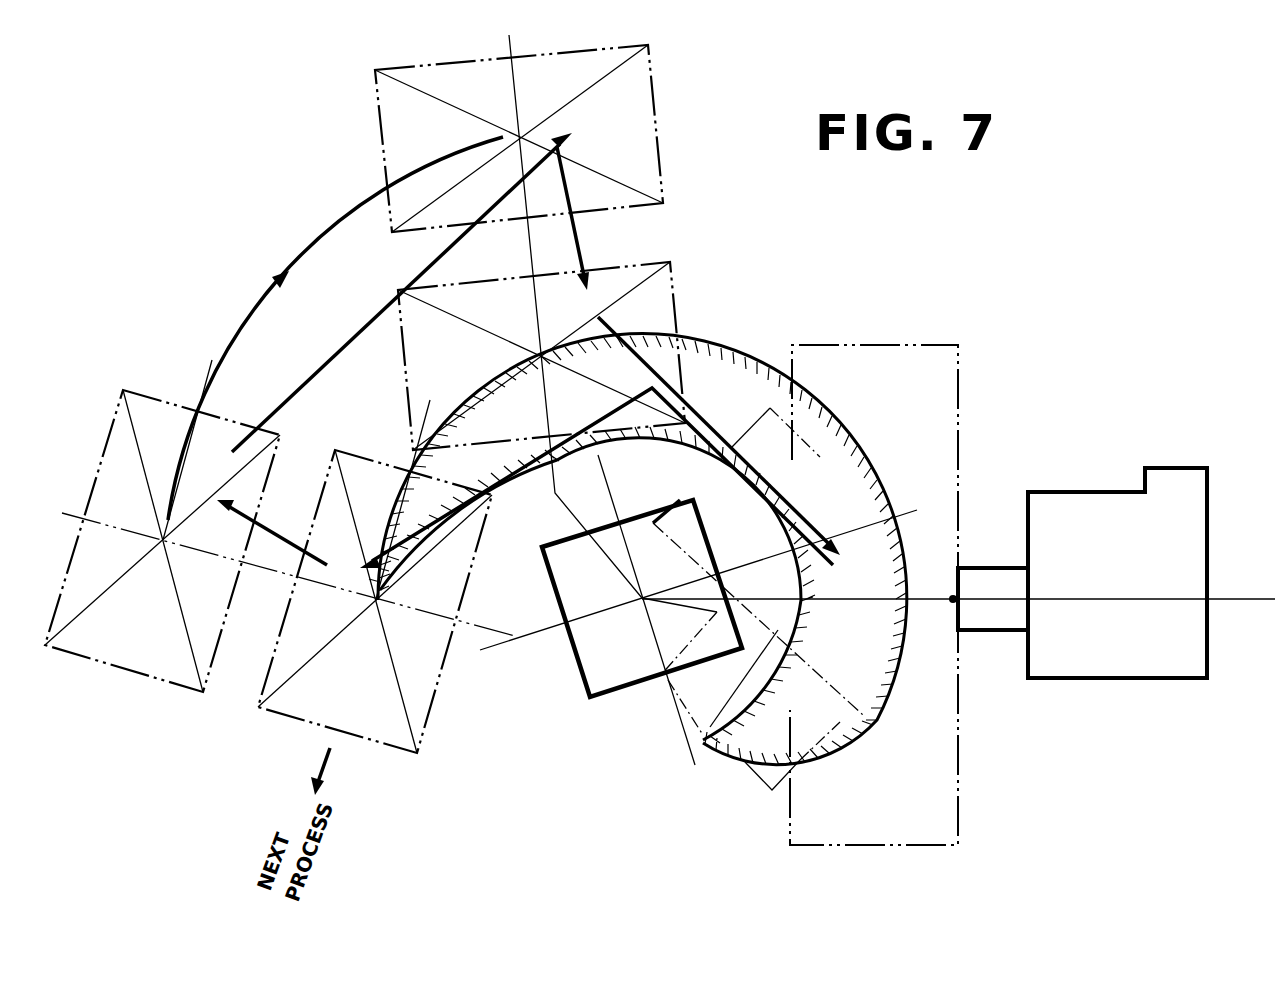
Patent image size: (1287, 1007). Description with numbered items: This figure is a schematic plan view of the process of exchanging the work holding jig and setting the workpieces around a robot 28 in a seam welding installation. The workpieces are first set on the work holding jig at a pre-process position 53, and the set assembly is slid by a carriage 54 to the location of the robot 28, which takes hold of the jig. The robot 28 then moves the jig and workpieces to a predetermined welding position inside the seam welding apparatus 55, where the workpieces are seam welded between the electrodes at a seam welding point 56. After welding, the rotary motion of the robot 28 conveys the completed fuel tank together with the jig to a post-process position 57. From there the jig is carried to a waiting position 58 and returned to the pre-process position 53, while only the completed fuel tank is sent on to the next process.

The robot 28 is at (588, 672).
The pre-process position 53 is at (637, 128).
The carriage 54 is at (677, 290).
The seam welding apparatus 55 is at (1068, 678).
The seam welding point 56 is at (956, 596).
The post-process position 57 is at (384, 722).
The waiting position 58 is at (145, 665).